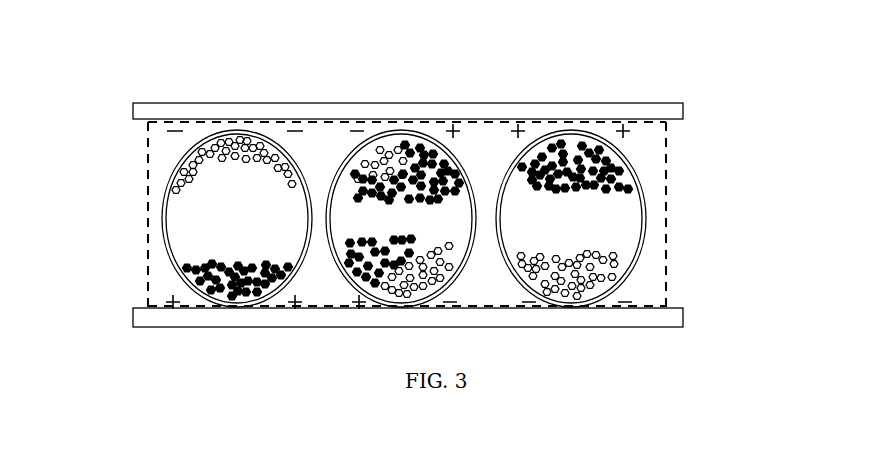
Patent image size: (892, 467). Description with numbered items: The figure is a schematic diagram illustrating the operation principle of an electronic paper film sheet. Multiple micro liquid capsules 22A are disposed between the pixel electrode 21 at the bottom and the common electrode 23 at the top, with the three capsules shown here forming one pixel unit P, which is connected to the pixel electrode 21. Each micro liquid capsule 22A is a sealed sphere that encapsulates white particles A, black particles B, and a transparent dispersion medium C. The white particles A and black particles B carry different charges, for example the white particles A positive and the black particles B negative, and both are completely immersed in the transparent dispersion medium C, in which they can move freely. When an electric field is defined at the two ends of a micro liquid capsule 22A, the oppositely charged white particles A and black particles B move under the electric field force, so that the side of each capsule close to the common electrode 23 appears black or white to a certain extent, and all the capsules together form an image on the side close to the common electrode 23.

The common electrode 23 is at (221, 103).
The pixel electrode 21 is at (682, 308).
The micro liquid capsule 22A is at (647, 200).
The white particle A is at (175, 175).
The black particle B is at (212, 298).
The transparent dispersion medium C is at (188, 215).
The pixel unit P is at (147, 287).